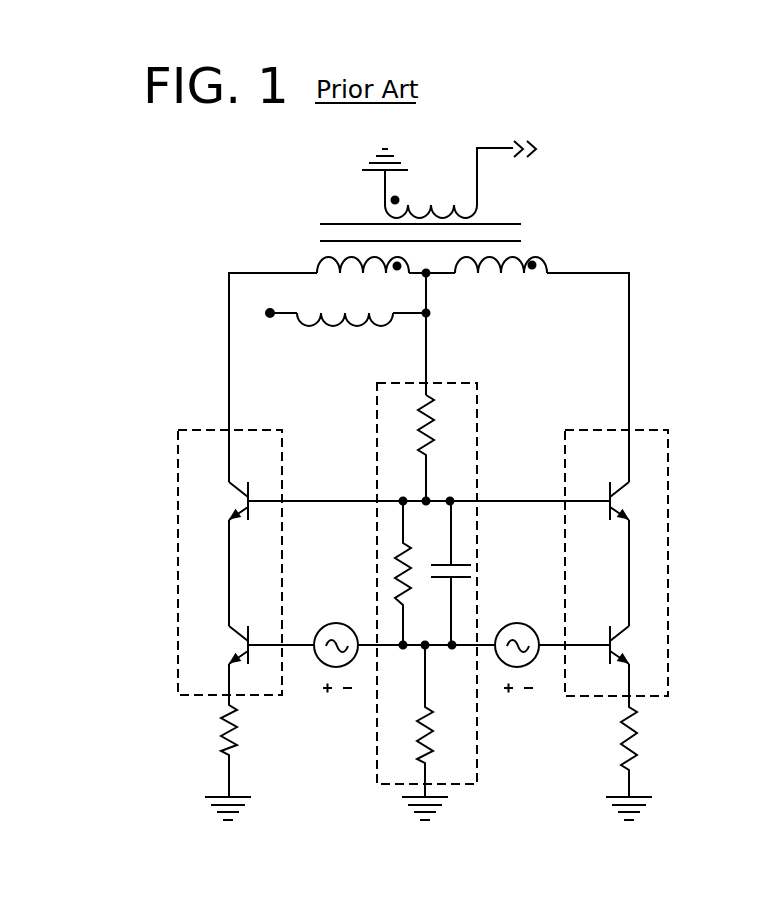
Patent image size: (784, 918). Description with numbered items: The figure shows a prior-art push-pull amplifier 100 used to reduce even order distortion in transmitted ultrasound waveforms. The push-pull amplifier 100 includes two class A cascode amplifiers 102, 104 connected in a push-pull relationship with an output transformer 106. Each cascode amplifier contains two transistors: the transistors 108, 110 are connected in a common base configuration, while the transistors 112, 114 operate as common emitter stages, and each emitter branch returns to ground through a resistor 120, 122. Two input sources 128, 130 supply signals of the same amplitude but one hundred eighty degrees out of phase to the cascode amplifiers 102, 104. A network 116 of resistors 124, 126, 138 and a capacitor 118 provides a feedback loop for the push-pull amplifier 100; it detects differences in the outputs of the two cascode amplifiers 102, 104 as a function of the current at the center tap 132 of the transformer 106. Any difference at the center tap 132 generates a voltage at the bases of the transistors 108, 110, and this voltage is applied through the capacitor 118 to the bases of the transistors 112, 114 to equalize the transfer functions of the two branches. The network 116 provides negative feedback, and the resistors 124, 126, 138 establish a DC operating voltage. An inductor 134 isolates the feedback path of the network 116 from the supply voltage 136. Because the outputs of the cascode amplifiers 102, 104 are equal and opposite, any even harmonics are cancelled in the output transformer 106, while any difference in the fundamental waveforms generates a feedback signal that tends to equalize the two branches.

The push-pull amplifier 100 is at (316, 152).
The cascode amplifier 102 is at (178, 478).
The cascode amplifier 104 is at (668, 435).
The output transformer 106 is at (325, 242).
The transistor 108 is at (236, 509).
The transistor 110 is at (624, 512).
The transistor 112 is at (236, 661).
The transistor 114 is at (624, 662).
The network 116 is at (467, 762).
The capacitor 118 is at (468, 578).
The emitter resistor 120 is at (219, 745).
The emitter resistor 122 is at (632, 730).
The resistor 124 is at (424, 458).
The resistor 126 is at (400, 575).
The input source 128 is at (338, 623).
The input source 130 is at (510, 623).
The center tap 132 is at (427, 275).
The inductor 134 is at (346, 327).
The supply voltage 136 is at (270, 313).
The resistor 138 is at (418, 750).